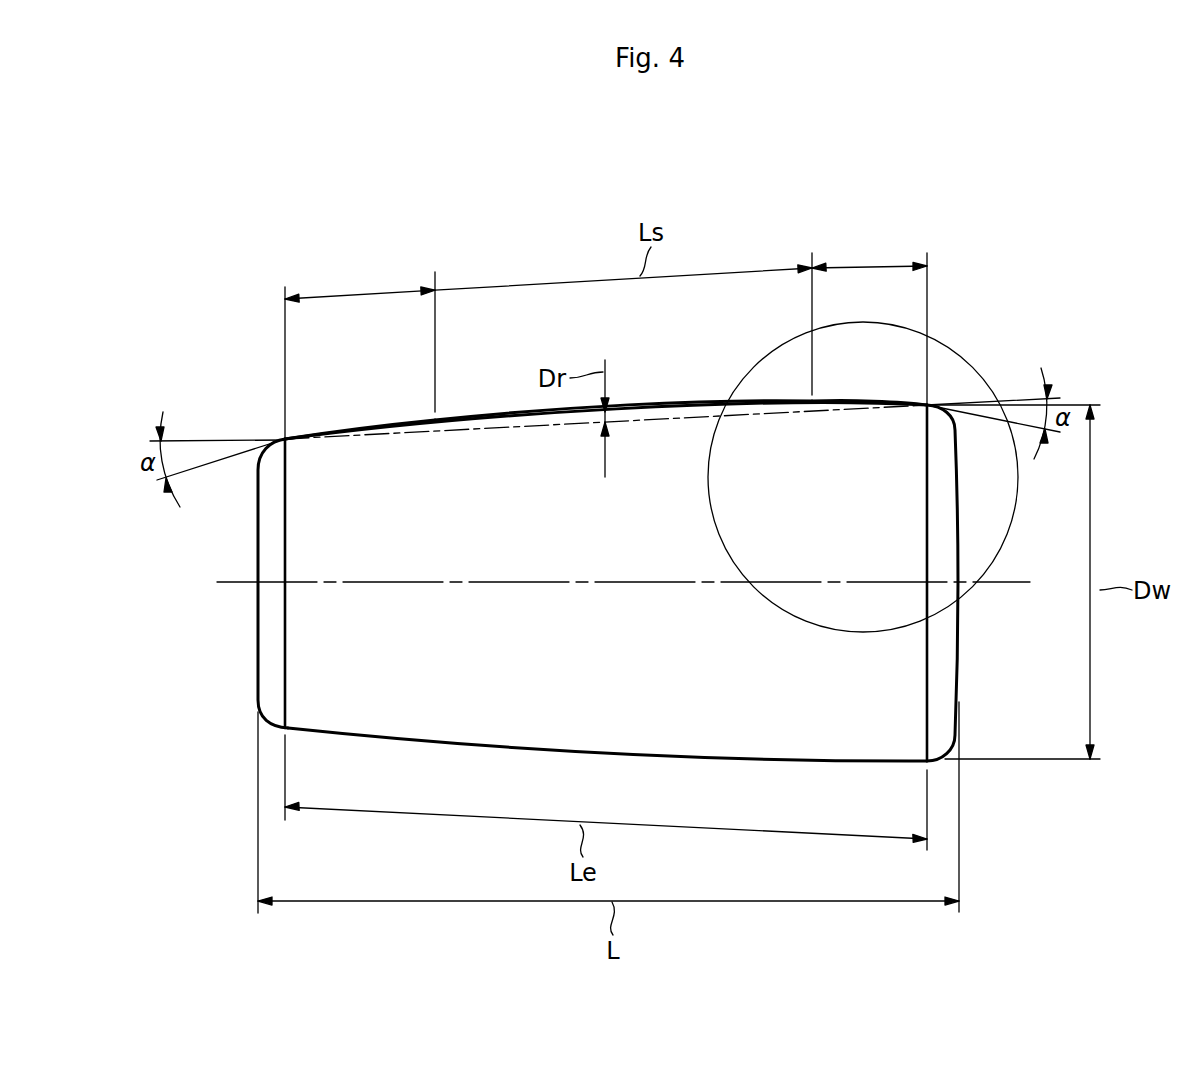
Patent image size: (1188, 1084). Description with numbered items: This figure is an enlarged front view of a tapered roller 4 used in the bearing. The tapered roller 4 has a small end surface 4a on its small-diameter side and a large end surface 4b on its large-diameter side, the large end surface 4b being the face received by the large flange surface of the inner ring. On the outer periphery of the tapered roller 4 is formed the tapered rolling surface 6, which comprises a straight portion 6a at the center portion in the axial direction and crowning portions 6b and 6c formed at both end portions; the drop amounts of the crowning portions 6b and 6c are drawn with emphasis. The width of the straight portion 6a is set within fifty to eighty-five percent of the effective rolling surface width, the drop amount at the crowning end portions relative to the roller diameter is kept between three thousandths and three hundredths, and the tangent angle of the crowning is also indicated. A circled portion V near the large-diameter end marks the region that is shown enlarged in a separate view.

The tapered roller 4 is at (611, 510).
The small end surface 4a is at (258, 627).
The large end surface 4b is at (958, 640).
The rolling surface 6 is at (660, 405).
The straight portion 6a is at (570, 278).
The crowning portion 6b is at (862, 266).
The crowning portion 6c is at (359, 288).
The portion V is at (962, 352).